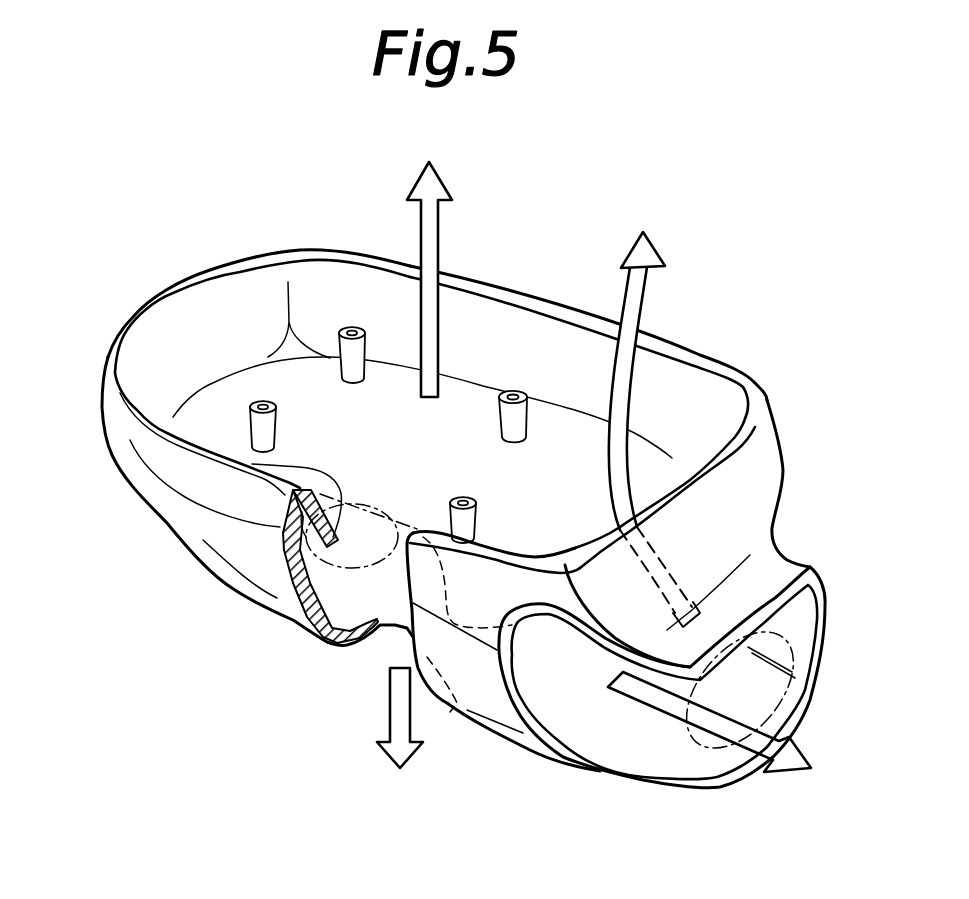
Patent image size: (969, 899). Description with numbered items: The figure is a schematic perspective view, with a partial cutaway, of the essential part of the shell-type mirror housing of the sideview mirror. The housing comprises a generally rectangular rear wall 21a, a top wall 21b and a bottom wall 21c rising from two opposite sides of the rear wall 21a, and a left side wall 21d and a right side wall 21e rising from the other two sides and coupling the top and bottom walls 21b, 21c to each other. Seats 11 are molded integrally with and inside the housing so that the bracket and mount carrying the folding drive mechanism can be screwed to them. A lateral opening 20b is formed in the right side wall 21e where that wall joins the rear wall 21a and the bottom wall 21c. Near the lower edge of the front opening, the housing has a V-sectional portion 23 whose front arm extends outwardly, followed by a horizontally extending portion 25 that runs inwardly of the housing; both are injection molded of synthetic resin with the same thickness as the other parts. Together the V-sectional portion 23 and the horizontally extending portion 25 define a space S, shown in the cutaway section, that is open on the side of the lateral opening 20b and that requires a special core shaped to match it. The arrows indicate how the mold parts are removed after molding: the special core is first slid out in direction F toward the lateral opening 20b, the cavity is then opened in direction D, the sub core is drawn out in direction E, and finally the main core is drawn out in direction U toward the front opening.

The seat 11 is at (253, 413).
The lateral opening 20b is at (793, 643).
The rear wall 21a is at (197, 410).
The top wall 21b is at (535, 357).
The bottom wall 21c is at (233, 547).
The left side wall 21d is at (212, 327).
The right side wall 21e is at (720, 503).
The V-sectional portion 23 is at (205, 506).
The horizontally extending portion 25 is at (257, 467).
The space S is at (347, 563).
The direction of arrow U is at (429, 261).
The direction of arrow D is at (400, 736).
The direction of arrow E is at (654, 414).
The direction of arrow F is at (719, 733).